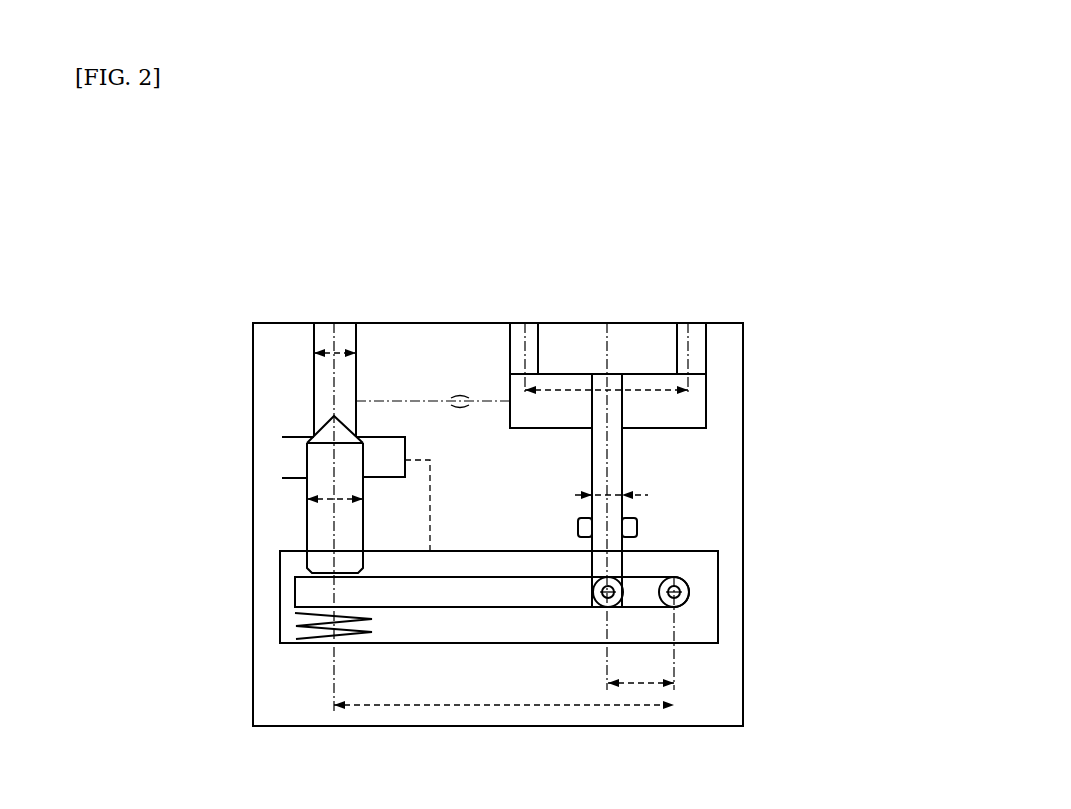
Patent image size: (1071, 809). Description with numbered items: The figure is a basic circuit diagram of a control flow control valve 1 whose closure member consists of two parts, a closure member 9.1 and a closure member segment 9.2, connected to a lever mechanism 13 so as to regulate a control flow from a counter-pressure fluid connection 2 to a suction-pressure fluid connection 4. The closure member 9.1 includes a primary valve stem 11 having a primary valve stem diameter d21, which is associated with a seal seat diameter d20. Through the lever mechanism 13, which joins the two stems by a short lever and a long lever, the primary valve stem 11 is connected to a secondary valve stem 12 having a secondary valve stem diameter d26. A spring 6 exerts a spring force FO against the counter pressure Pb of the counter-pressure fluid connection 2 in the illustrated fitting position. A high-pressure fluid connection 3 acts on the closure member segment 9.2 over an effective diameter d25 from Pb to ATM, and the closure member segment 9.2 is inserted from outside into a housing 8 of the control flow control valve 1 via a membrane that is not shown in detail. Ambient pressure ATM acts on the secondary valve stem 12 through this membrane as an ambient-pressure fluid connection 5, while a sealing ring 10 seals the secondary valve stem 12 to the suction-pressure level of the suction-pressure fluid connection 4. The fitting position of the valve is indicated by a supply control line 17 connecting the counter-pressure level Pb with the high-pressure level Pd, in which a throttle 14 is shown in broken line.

The control flow control valve 1 is at (505, 461).
The counter-pressure fluid connection 2 is at (342, 335).
The high-pressure fluid connection 3 is at (706, 400).
The suction-pressure fluid connection 4 is at (293, 458).
The ambient-pressure fluid connection 5 is at (679, 442).
The spring 6 is at (308, 645).
The housing 8 is at (728, 653).
The closure member 9.1 is at (318, 462).
The closure member segment 9.2 is at (567, 341).
The sealing ring 10 is at (578, 527).
The primary valve stem 11 is at (317, 525).
The secondary valve stem 12 is at (623, 428).
The lever mechanism 13 is at (292, 612).
The throttle 14 is at (460, 395).
The supply control line 17 is at (431, 406).
The seal seat diameter d20 is at (310, 354).
The primary valve stem diameter d21 is at (312, 492).
The effective diameter d25 is at (637, 387).
The secondary valve stem diameter d26 is at (608, 493).